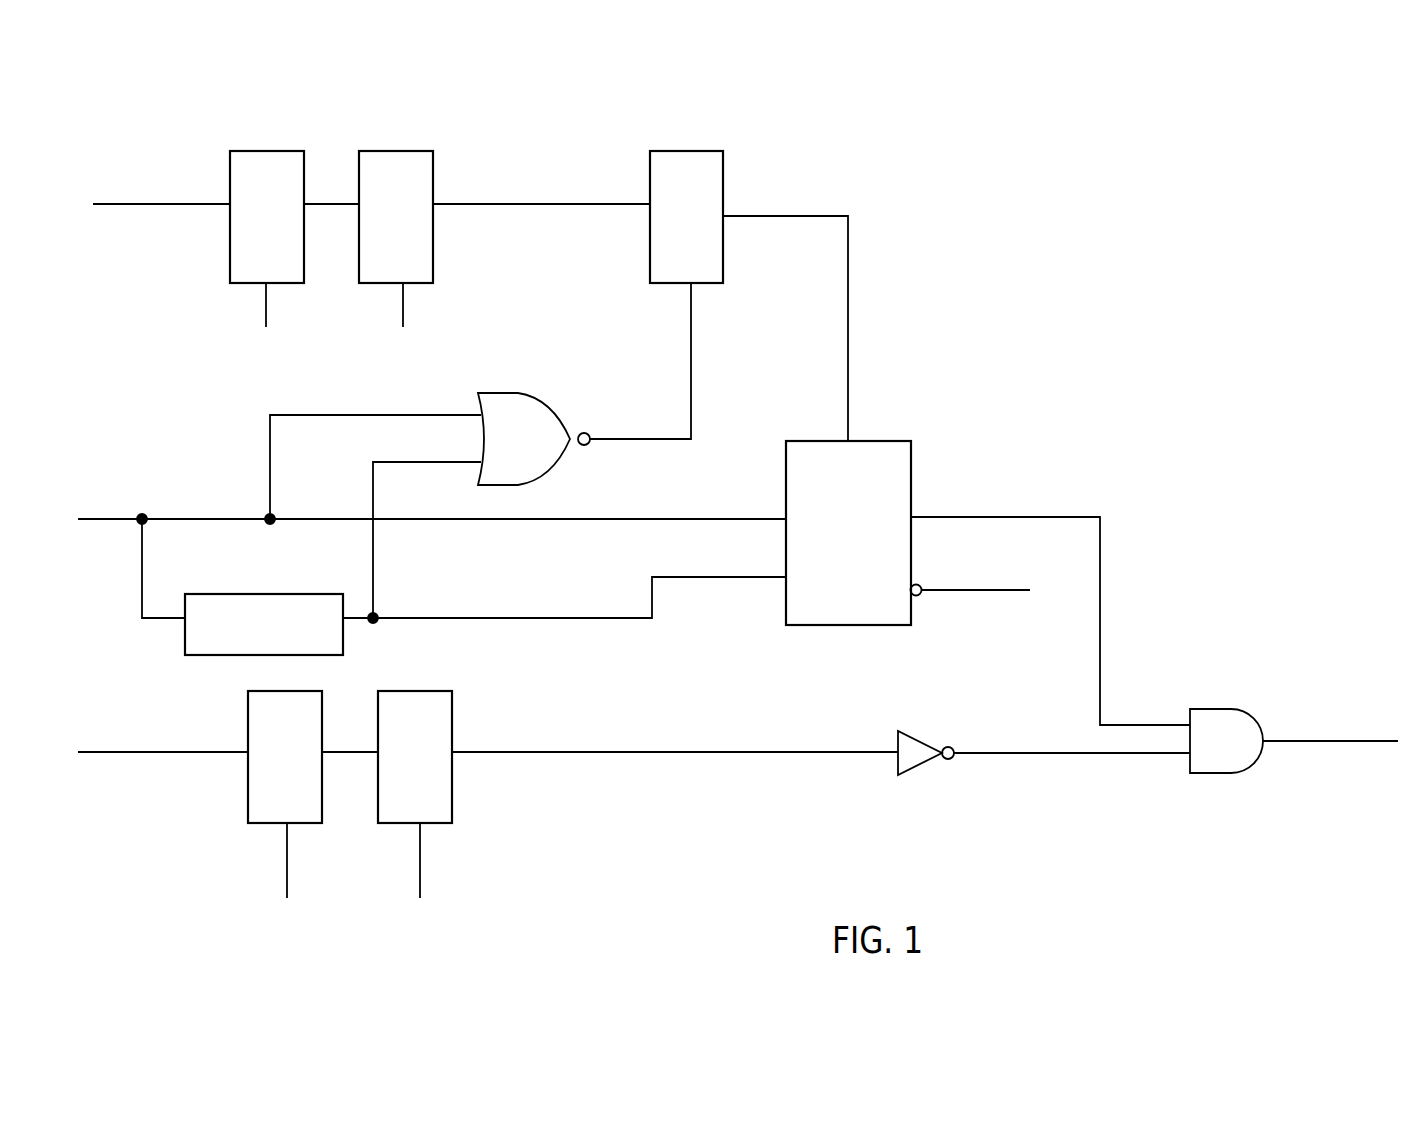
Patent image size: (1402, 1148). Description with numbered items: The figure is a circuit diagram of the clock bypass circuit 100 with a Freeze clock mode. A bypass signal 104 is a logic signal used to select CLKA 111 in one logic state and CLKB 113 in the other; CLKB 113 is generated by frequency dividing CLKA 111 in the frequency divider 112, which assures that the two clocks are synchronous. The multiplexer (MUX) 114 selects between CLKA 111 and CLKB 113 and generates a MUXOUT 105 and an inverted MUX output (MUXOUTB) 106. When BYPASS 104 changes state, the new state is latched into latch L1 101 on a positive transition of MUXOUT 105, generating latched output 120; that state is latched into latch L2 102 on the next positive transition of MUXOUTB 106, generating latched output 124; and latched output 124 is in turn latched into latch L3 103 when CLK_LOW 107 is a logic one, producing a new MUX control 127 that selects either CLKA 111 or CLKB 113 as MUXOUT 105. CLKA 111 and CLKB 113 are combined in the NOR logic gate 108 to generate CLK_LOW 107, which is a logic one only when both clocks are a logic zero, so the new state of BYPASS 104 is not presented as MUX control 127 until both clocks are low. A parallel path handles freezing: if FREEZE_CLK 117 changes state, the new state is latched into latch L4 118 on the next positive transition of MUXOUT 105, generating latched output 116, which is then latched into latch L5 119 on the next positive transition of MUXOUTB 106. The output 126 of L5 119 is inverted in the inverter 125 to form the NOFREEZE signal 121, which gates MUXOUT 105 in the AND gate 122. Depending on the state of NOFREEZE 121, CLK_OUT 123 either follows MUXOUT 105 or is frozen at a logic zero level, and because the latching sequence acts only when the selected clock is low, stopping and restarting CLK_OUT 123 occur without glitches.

The clock bypass circuit 100 is at (1050, 237).
The latch L1 101 is at (273, 148).
The latch L2 102 is at (433, 160).
The latch L3 103 is at (688, 150).
The bypass signal 104 is at (152, 205).
The MUXOUT 105 is at (265, 308).
The inverted MUX output (MUXOUTB) 106 is at (403, 310).
The CLK_LOW 107 is at (692, 313).
The NOR logic gate 108 is at (535, 398).
The CLKA 111 is at (108, 518).
The frequency divider 112 is at (226, 594).
The CLKB 113 is at (553, 620).
The multiplexer (MUX) 114 is at (880, 440).
The latched output 116 is at (355, 753).
The FREEZE_CLK 117 is at (210, 752).
The latch L4 118 is at (322, 698).
The latch L5 119 is at (452, 714).
The latched output 120 is at (316, 203).
The NOFREEZE signal 121 is at (1145, 752).
The AND gate 122 is at (1208, 708).
The CLK_OUT 123 is at (1327, 752).
The latched output 124 is at (553, 206).
The inverter 125 is at (913, 733).
The output of L5 126 is at (627, 753).
The MUX control 127 is at (849, 255).